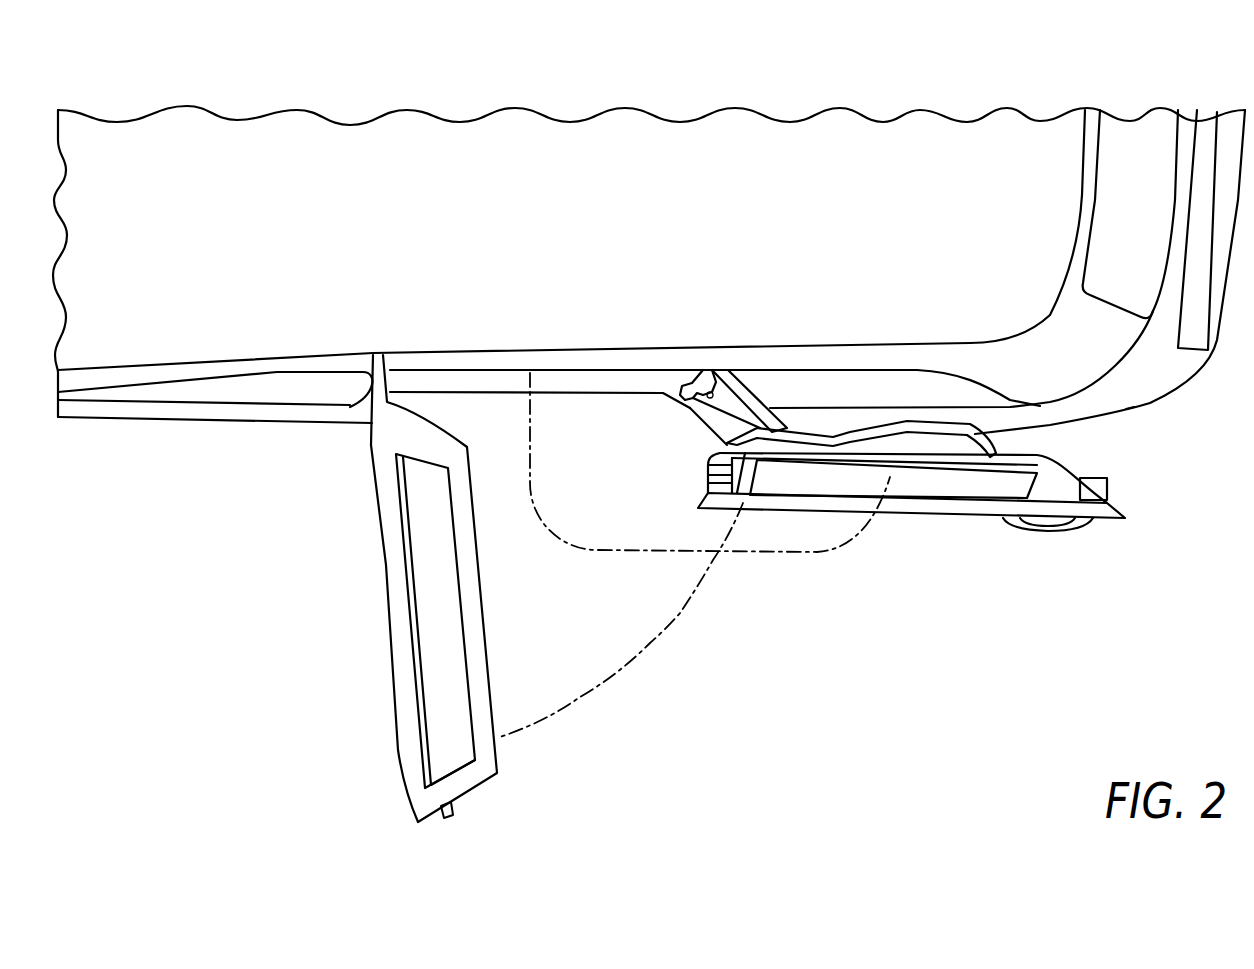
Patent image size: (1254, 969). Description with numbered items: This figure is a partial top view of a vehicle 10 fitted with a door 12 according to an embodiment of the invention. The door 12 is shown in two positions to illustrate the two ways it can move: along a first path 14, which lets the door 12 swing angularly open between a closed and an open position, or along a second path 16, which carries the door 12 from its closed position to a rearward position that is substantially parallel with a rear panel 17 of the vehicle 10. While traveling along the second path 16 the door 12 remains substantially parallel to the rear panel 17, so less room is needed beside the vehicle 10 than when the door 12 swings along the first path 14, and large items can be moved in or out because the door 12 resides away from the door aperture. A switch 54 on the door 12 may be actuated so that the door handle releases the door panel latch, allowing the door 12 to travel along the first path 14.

The vehicle 10 is at (842, 140).
The door 12 is at (385, 588).
The first path 14 is at (650, 643).
The second path 16 is at (863, 535).
The rear panel 17 is at (1130, 402).
The switch 54 is at (452, 812).